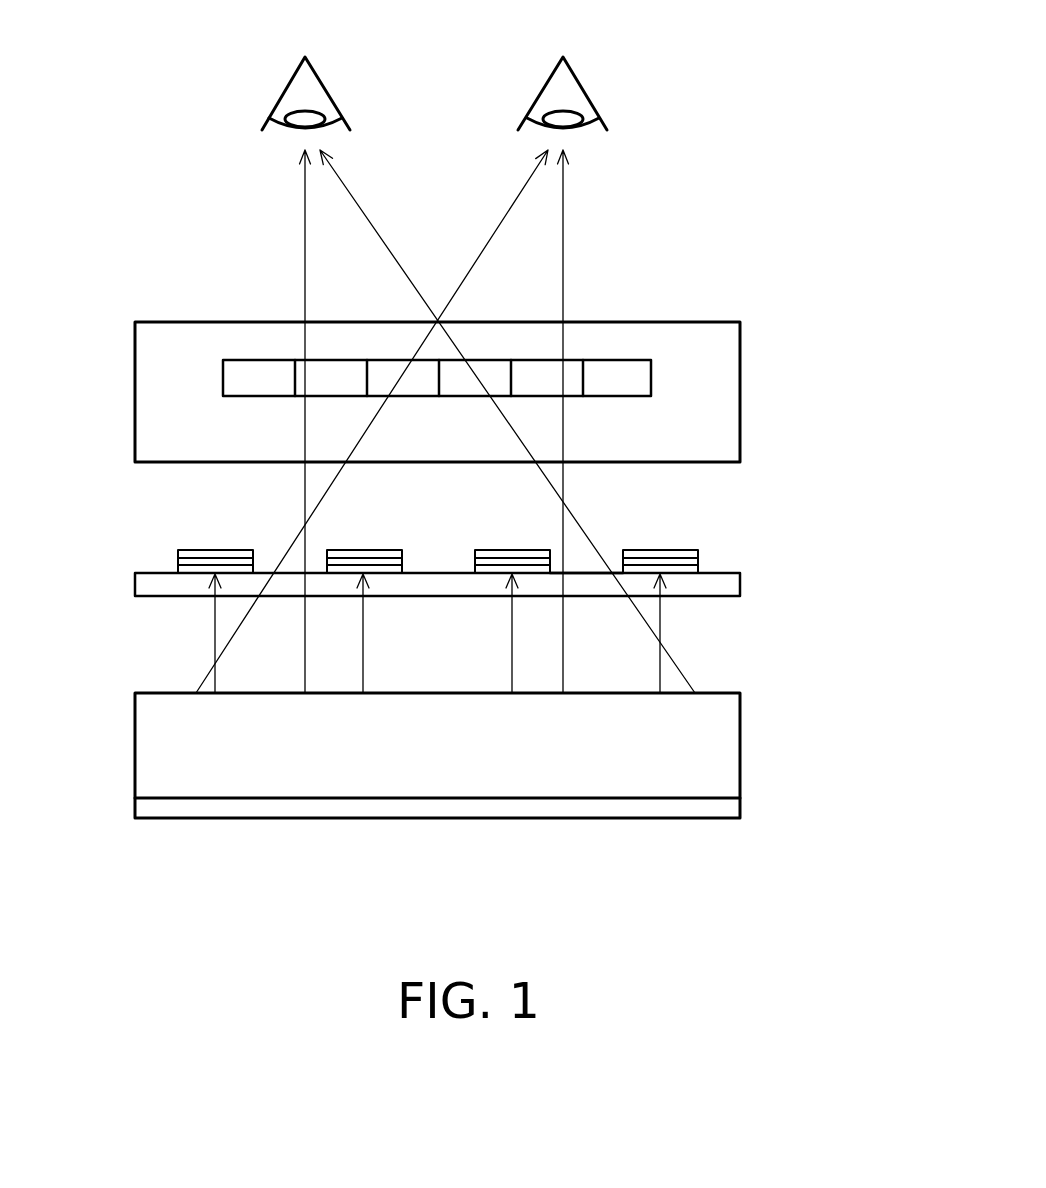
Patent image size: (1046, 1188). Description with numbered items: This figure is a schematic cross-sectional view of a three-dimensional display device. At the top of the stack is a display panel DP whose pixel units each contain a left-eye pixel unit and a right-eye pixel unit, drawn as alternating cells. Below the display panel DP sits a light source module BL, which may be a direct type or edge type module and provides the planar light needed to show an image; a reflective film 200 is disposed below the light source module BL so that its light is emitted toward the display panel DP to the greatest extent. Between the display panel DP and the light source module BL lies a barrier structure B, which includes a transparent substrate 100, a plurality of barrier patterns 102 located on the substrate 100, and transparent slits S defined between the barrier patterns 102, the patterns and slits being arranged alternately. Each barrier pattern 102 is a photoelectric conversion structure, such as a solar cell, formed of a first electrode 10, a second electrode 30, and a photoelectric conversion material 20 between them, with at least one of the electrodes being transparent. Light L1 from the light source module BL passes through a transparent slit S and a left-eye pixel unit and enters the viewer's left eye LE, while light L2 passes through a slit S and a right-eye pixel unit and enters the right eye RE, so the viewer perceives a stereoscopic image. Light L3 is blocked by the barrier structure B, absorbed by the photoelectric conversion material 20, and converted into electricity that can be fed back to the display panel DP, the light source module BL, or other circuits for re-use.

The right eye RE is at (306, 73).
The left eye LE is at (562, 73).
The display panel DP is at (725, 358).
The light L1 is at (283, 550).
The light L2 is at (305, 505).
The light L3 is at (215, 632).
The transparent slit S is at (618, 539).
The second electrode 30 is at (698, 551).
The photoelectric conversion material 20 is at (698, 561).
The first electrode 10 is at (494, 591).
The barrier pattern 102 is at (525, 553).
The substrate 100 is at (727, 588).
The barrier structure B is at (530, 576).
The light source module BL is at (510, 793).
The reflective film 200 is at (717, 805).